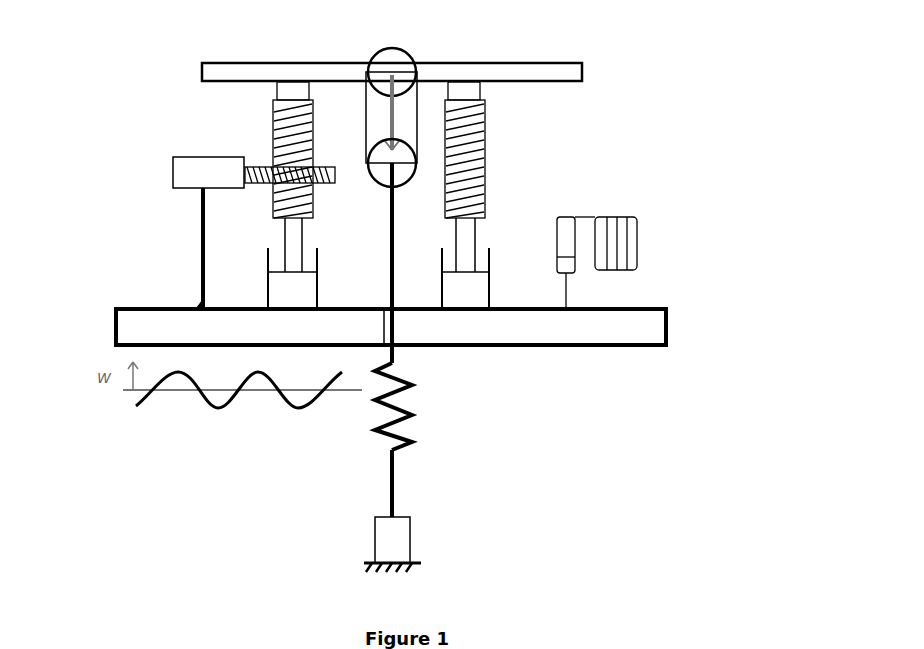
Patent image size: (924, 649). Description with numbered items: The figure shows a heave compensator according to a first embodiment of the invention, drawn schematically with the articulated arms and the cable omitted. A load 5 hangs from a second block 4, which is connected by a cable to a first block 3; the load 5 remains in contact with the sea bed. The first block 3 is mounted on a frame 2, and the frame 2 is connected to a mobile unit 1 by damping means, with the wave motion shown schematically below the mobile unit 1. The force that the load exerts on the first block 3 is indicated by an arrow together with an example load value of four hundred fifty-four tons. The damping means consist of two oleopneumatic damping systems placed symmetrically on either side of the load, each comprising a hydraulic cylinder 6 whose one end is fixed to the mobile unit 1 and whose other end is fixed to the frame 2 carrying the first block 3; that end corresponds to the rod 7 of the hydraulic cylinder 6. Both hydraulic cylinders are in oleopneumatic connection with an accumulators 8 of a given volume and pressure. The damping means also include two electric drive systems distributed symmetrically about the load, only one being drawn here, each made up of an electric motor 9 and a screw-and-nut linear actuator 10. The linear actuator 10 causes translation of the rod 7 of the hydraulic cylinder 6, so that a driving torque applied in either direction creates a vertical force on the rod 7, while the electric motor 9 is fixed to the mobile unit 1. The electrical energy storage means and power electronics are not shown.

The mobile unit 1 is at (668, 323).
The frame 2 is at (580, 72).
The first block 3 is at (405, 75).
The second block 4 is at (405, 155).
The load 5 is at (395, 537).
The hydraulic cylinder 6 is at (455, 288).
The rod 7 is at (470, 118).
The accumulators 8 is at (608, 228).
The electric motor 9 is at (197, 177).
The screw-and-nut linear actuator 10 is at (293, 165).